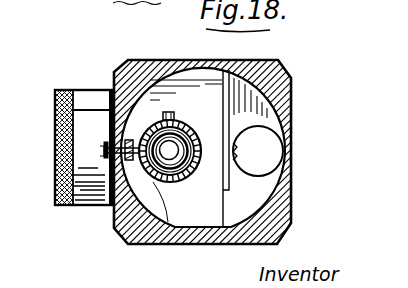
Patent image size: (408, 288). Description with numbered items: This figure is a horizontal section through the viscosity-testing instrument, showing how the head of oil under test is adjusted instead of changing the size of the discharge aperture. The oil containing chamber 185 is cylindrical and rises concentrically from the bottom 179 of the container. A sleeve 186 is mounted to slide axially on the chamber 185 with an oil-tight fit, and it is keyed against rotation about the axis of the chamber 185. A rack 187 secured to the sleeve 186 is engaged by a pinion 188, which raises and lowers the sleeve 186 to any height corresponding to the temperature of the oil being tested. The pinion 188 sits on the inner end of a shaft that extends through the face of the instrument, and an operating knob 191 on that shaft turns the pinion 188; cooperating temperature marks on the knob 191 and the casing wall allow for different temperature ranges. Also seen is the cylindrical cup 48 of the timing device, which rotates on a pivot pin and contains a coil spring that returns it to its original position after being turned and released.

The cylindrical cup 48 is at (90, 97).
The bottom 179 is at (193, 82).
The oil containing chamber 185 is at (119, 213).
The sleeve 186 is at (159, 238).
The rack 187 is at (127, 138).
The pinion 188 is at (142, 170).
The operating knob 191 is at (84, 178).